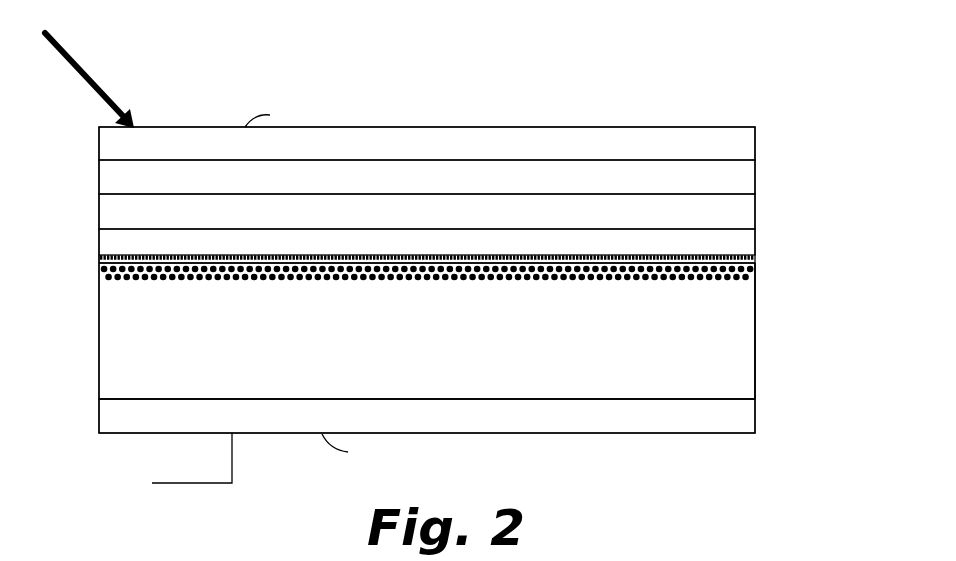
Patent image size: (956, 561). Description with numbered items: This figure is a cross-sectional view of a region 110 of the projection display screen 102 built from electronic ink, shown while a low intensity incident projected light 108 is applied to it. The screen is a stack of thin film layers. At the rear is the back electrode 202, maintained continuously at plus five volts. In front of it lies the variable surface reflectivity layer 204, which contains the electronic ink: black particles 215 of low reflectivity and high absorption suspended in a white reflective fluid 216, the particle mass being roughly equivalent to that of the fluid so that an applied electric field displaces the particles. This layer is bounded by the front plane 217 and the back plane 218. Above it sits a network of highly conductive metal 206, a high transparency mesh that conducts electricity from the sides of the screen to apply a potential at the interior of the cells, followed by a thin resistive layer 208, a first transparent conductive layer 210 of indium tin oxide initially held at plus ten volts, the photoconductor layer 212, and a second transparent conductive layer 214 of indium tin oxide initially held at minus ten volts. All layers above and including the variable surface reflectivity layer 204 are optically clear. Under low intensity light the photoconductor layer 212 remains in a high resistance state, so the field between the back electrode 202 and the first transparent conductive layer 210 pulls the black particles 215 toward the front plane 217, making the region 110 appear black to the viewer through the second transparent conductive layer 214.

The projection display screen 102 is at (755, 127).
The incident projected light 108 is at (85, 70).
The region 110 is at (240, 509).
The back electrode 202 is at (427, 416).
The variable surface reflectivity layer 204 is at (427, 331).
The network of highly conductive metal 206 is at (235, 255).
The thin resistive layer 208 is at (427, 243).
The first transparent conductive layer 210 is at (427, 211).
The photoconductor layer 212 is at (427, 177).
The second transparent conductive layer 214 is at (427, 143).
The black particles 215 is at (735, 272).
The white reflective fluid 216 is at (755, 342).
The front plane 217 is at (99, 258).
The back plane 218 is at (747, 400).